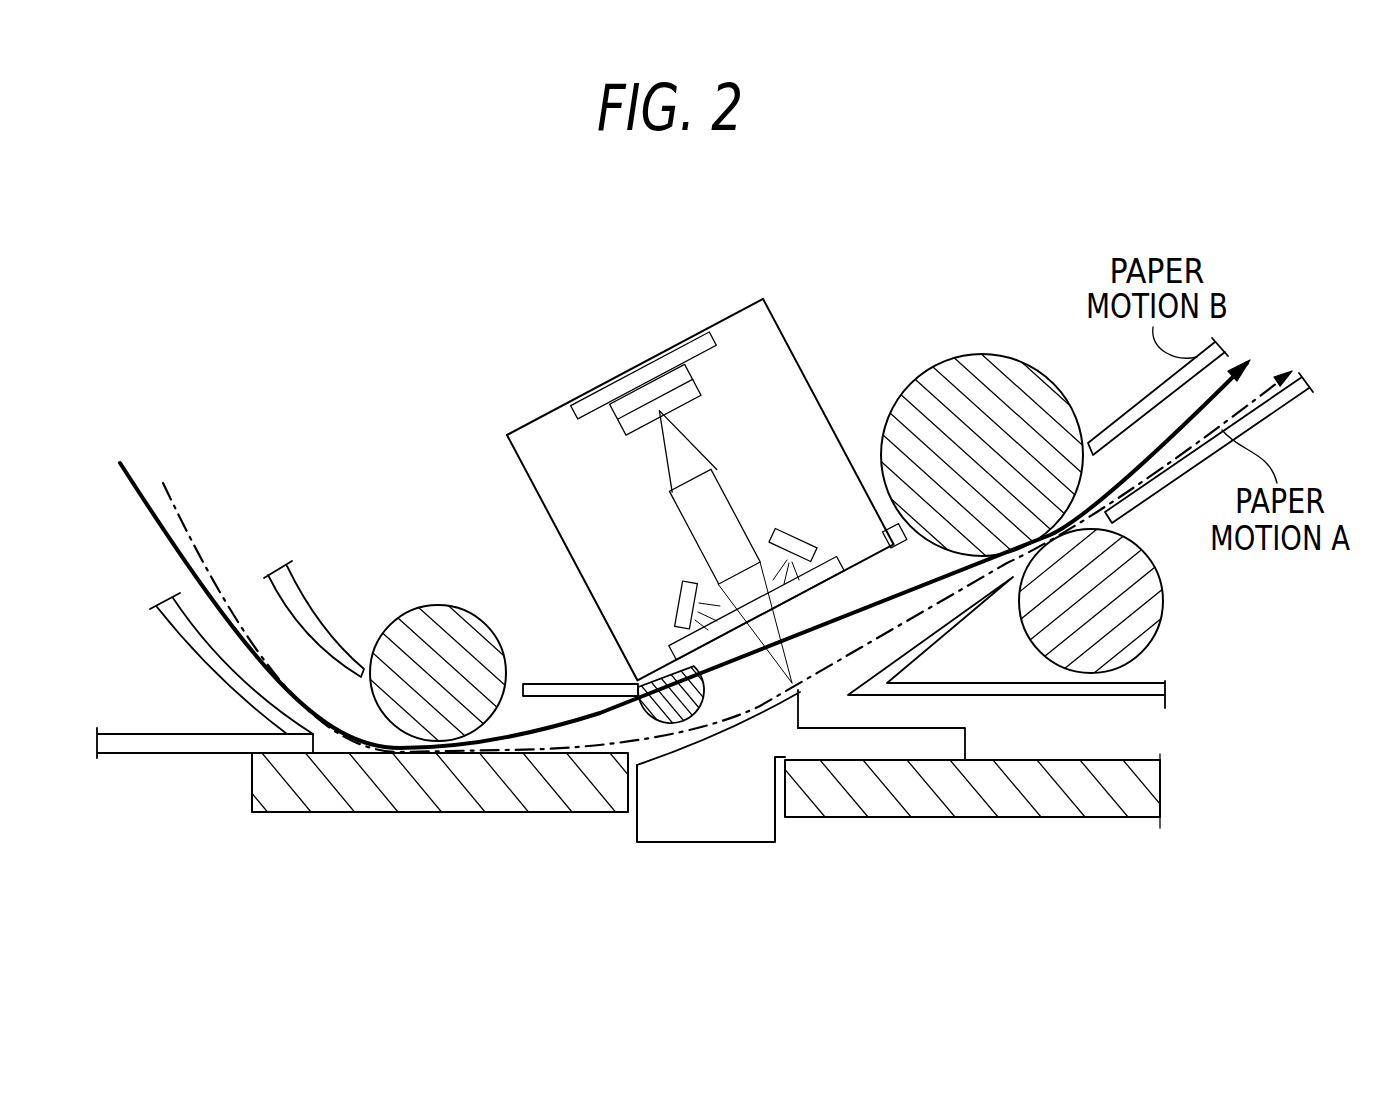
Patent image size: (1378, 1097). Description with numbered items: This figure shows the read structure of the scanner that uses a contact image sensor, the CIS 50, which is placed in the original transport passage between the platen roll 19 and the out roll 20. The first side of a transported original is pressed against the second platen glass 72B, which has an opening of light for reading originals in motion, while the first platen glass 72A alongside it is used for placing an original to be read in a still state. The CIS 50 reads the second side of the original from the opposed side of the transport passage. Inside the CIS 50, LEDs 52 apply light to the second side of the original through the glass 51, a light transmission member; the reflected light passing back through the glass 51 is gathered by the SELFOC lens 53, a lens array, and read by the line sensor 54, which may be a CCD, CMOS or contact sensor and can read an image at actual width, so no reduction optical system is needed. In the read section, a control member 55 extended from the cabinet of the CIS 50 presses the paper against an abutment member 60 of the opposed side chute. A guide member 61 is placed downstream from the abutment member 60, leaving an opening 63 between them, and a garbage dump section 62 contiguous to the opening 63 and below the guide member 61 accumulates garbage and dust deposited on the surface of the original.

The platen roll 19 is at (440, 603).
The out roll 20 is at (987, 353).
The CIS 50 is at (733, 311).
The glass 51 is at (668, 663).
The LEDs 52 is at (682, 585).
The SELFOC lens 53 is at (717, 480).
The line sensor 54 is at (700, 390).
The control member 55 is at (643, 713).
The abutment member 60 is at (655, 842).
The guide member 61 is at (947, 697).
The garbage dump section 62 is at (883, 715).
The opening 63 is at (830, 692).
The first platen glass 72A is at (1115, 817).
The second platen glass 72B is at (383, 812).